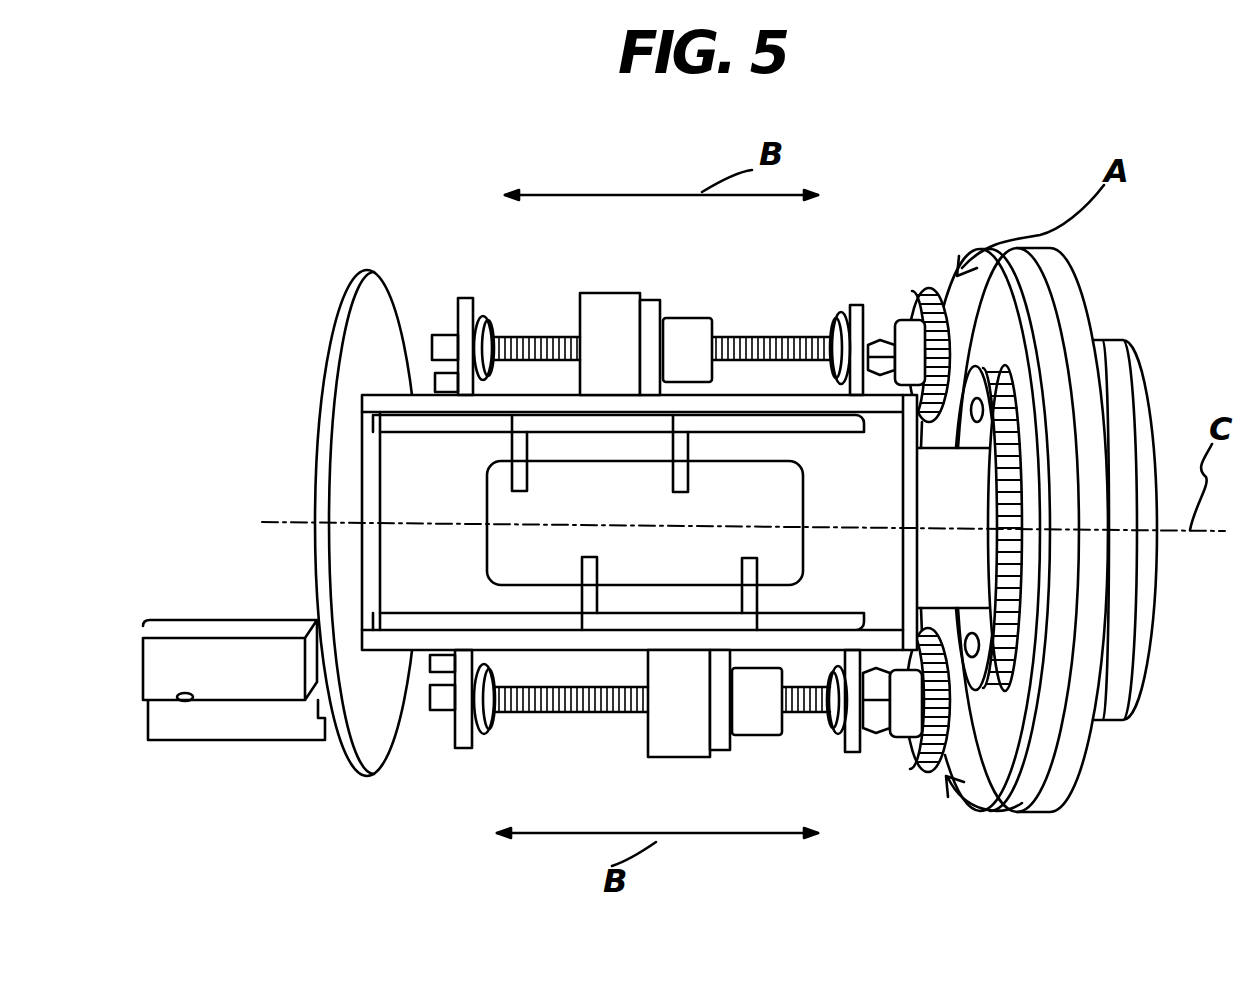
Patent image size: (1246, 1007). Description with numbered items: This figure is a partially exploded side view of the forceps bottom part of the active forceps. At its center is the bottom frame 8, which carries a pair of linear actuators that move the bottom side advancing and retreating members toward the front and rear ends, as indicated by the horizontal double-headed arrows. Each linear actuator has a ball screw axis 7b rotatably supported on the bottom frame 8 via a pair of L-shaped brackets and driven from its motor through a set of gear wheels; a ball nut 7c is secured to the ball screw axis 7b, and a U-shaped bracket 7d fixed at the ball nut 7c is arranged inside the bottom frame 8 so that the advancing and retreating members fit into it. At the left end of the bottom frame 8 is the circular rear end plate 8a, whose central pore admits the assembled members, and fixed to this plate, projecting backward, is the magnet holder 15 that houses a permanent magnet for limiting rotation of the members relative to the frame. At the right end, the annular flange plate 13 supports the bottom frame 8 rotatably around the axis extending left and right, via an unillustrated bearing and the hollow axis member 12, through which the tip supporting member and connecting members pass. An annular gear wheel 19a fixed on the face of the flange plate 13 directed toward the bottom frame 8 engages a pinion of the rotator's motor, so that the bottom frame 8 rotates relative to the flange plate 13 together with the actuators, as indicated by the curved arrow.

The bottom frame 8 is at (551, 385).
The circular rear end plate 8a is at (345, 332).
The magnet holder 15 is at (213, 622).
The ball screw axis 7b is at (782, 343).
The ball nut 7c is at (705, 322).
The U-shaped bracket 7d is at (690, 492).
The annular gear wheel 19a is at (975, 368).
The hollow axis member 12 is at (941, 773).
The annular flange plate 13 is at (1080, 777).